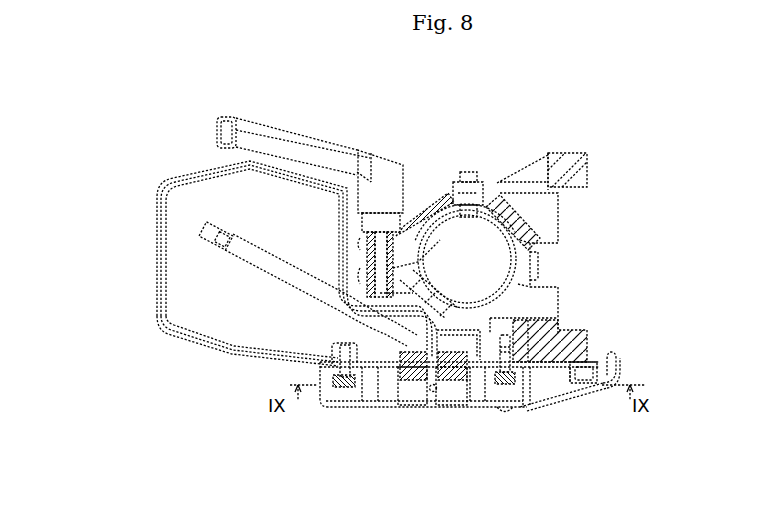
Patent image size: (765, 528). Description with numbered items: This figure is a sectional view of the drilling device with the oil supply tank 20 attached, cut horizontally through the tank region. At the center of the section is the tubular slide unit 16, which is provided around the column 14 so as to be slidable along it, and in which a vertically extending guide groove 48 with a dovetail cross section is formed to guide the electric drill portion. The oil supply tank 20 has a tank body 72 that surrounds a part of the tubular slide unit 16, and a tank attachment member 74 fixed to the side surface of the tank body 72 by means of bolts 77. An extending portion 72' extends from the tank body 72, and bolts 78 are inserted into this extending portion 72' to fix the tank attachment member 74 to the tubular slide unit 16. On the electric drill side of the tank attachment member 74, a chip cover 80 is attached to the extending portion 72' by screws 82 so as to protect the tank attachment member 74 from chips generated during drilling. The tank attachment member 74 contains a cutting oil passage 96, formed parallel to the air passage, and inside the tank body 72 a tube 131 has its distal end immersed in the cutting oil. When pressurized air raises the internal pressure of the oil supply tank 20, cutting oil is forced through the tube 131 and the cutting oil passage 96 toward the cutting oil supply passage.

The column 14 is at (500, 232).
The tubular slide unit 16 is at (440, 187).
The oil supply tank 20 is at (150, 212).
The guide groove 48 is at (580, 330).
The tank body 72 is at (247, 389).
The extending portion 72' is at (577, 431).
The tank attachment member 74 is at (433, 395).
The bolts 77 is at (345, 388).
The bolts 78 is at (520, 413).
The chip cover 80 is at (583, 397).
The screws 82 is at (503, 396).
The cutting oil passage 96 is at (418, 396).
The tube 131 is at (250, 265).